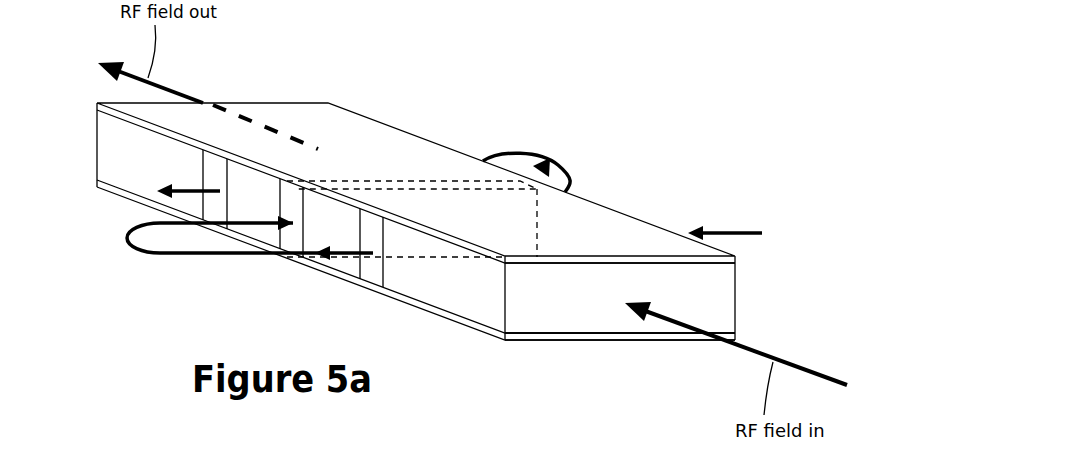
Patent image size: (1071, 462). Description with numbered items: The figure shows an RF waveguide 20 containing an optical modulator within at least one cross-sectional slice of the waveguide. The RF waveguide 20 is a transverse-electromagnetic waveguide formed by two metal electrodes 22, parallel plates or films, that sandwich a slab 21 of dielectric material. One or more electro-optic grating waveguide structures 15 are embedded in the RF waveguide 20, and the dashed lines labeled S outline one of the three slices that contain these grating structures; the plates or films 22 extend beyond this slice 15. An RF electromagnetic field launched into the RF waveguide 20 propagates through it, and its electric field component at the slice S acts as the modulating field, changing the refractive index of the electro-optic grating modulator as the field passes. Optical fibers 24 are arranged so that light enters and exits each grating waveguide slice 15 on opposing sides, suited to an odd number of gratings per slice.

The electro-optic grating waveguide structure 15 is at (218, 172).
The RF waveguide 20 is at (559, 354).
The slab 21 is at (603, 315).
The metal electrodes 22 is at (388, 140).
The optical fibers 24 is at (157, 178).
The cross-sectional slice outline S is at (537, 205).